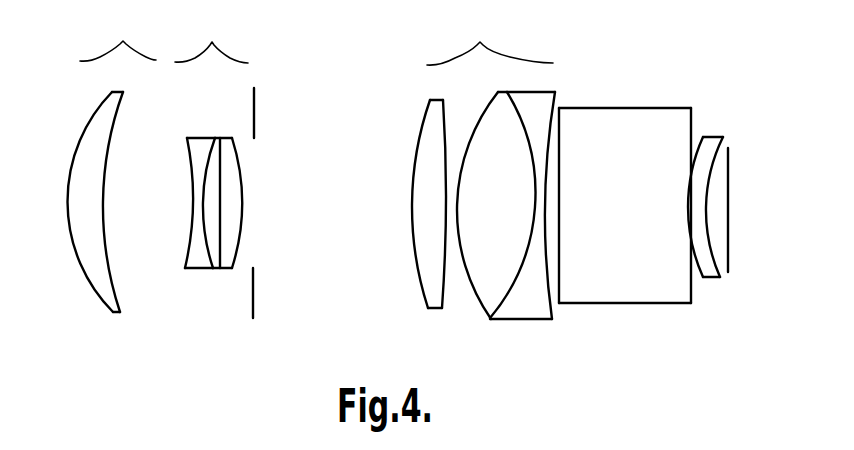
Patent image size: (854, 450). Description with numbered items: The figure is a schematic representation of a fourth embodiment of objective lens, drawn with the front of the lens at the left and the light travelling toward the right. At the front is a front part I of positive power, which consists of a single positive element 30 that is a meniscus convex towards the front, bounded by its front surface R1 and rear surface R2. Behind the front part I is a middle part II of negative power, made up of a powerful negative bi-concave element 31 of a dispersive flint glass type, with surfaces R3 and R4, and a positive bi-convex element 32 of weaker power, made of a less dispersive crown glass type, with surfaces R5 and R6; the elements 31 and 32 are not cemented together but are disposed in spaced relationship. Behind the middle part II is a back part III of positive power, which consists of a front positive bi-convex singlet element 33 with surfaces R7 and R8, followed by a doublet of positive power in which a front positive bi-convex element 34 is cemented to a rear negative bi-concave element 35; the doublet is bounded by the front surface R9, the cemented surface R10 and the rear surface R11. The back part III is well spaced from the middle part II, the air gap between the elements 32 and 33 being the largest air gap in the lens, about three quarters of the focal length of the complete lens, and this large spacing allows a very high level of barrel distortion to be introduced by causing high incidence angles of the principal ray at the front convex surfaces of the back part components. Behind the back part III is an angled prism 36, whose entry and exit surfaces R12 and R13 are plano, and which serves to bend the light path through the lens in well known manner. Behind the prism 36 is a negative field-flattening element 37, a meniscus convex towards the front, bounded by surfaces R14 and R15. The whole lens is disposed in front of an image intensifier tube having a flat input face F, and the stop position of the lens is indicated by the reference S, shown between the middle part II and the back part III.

The front part I is at (118, 36).
The middle part II is at (211, 37).
The back part III is at (490, 40).
The positive element 30 is at (96, 225).
The negative bi-concave element 31 is at (189, 212).
The positive bi-convex element 32 is at (242, 244).
The front positive singlet element 33 is at (424, 229).
The front positive bi-convex element 34 is at (496, 207).
The rear negative bi-concave element 35 is at (546, 225).
The angled prism 36 is at (626, 228).
The negative field-flattening element 37 is at (733, 228).
The stop position S is at (253, 318).
The flat input face F is at (729, 255).
The surface R1 is at (80, 265).
The surface R2 is at (104, 212).
The surface R3 is at (190, 166).
The surface R4 is at (212, 152).
The surface R5 is at (213, 268).
The surface R6 is at (243, 212).
The surface R7 is at (415, 253).
The surface R8 is at (427, 340).
The surface R9 is at (482, 112).
The surface R10 is at (528, 146).
The surface R11 is at (546, 242).
The surface R12 is at (560, 172).
The surface R13 is at (693, 128).
The surface R14 is at (692, 270).
The surface R15 is at (707, 197).